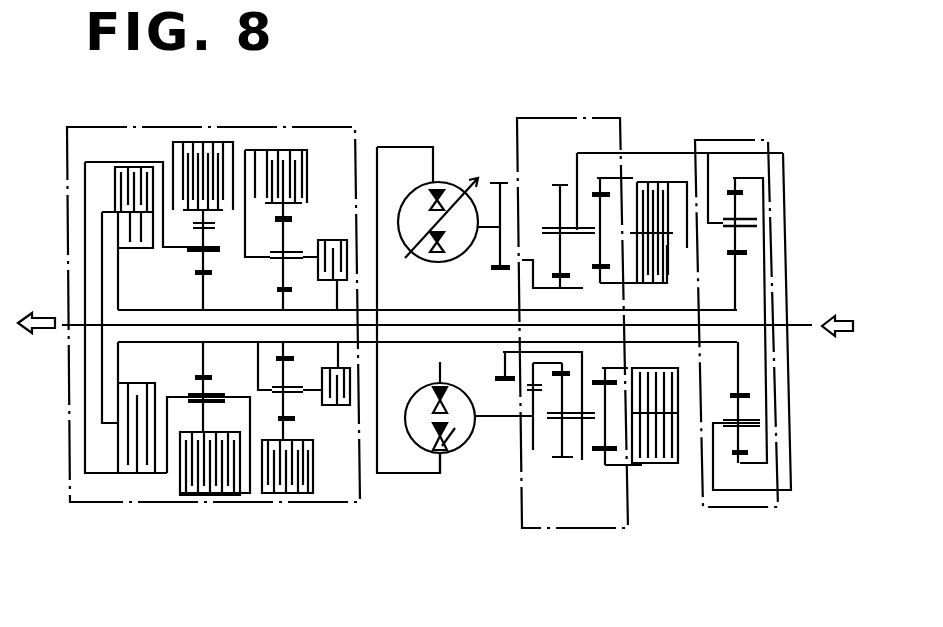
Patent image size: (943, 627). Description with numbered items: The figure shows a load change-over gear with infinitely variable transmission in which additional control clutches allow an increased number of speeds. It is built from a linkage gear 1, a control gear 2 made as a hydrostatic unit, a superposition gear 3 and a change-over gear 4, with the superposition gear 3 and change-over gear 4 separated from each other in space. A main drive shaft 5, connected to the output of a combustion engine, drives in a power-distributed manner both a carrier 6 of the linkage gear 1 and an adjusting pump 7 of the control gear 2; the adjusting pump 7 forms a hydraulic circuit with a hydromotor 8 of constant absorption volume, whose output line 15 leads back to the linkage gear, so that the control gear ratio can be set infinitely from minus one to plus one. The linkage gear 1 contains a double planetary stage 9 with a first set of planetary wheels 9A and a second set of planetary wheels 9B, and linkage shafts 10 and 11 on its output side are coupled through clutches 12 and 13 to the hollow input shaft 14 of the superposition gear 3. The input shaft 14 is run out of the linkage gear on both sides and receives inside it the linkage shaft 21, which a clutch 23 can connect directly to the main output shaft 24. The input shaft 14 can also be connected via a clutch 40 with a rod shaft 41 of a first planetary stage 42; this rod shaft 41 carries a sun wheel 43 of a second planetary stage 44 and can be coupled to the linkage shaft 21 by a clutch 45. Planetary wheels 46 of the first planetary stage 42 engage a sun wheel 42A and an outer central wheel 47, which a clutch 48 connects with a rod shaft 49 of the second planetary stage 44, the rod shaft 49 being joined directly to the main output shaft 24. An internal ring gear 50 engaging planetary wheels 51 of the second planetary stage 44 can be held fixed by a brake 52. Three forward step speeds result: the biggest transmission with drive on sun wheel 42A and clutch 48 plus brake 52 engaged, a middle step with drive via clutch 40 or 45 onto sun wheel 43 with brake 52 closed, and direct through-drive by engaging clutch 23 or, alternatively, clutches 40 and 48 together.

The linkage gear 1 is at (578, 115).
The control gear 2 is at (434, 136).
The superposition gear 3 is at (735, 130).
The change-over gear 4 is at (303, 124).
The main drive shaft 5 is at (790, 327).
The carrier 6 is at (577, 168).
The adjusting pump 7 is at (410, 214).
The hydromotor 8 is at (458, 432).
The double planetary stage 9 is at (556, 228).
The first set of planetary wheels 9A is at (560, 440).
The second set of planetary wheels 9B is at (605, 430).
The linkage shaft 10 is at (618, 467).
The linkage shaft 11 is at (643, 287).
The clutch 12 is at (647, 190).
The clutch 13 is at (655, 392).
The input shaft 14 is at (705, 320).
The motor output shaft 15 is at (488, 414).
The linkage shaft 21 is at (120, 325).
The clutch 23 is at (133, 175).
The main output shaft 24 is at (78, 320).
The clutch 40 is at (345, 240).
The rod shaft 41 is at (256, 280).
The first planetary stage 42 is at (287, 519).
The sun wheel 42A is at (286, 300).
The sun wheel 43 is at (206, 352).
The second planetary stage 44 is at (207, 517).
The clutch 45 is at (128, 262).
The planetary wheels 46 is at (287, 238).
The outer central wheel 47 is at (290, 428).
The clutch 48 is at (287, 163).
The rod shaft 49 is at (186, 252).
The internal ring gear 50 is at (205, 213).
The planetary wheels 51 is at (197, 382).
The brake 52 is at (220, 180).